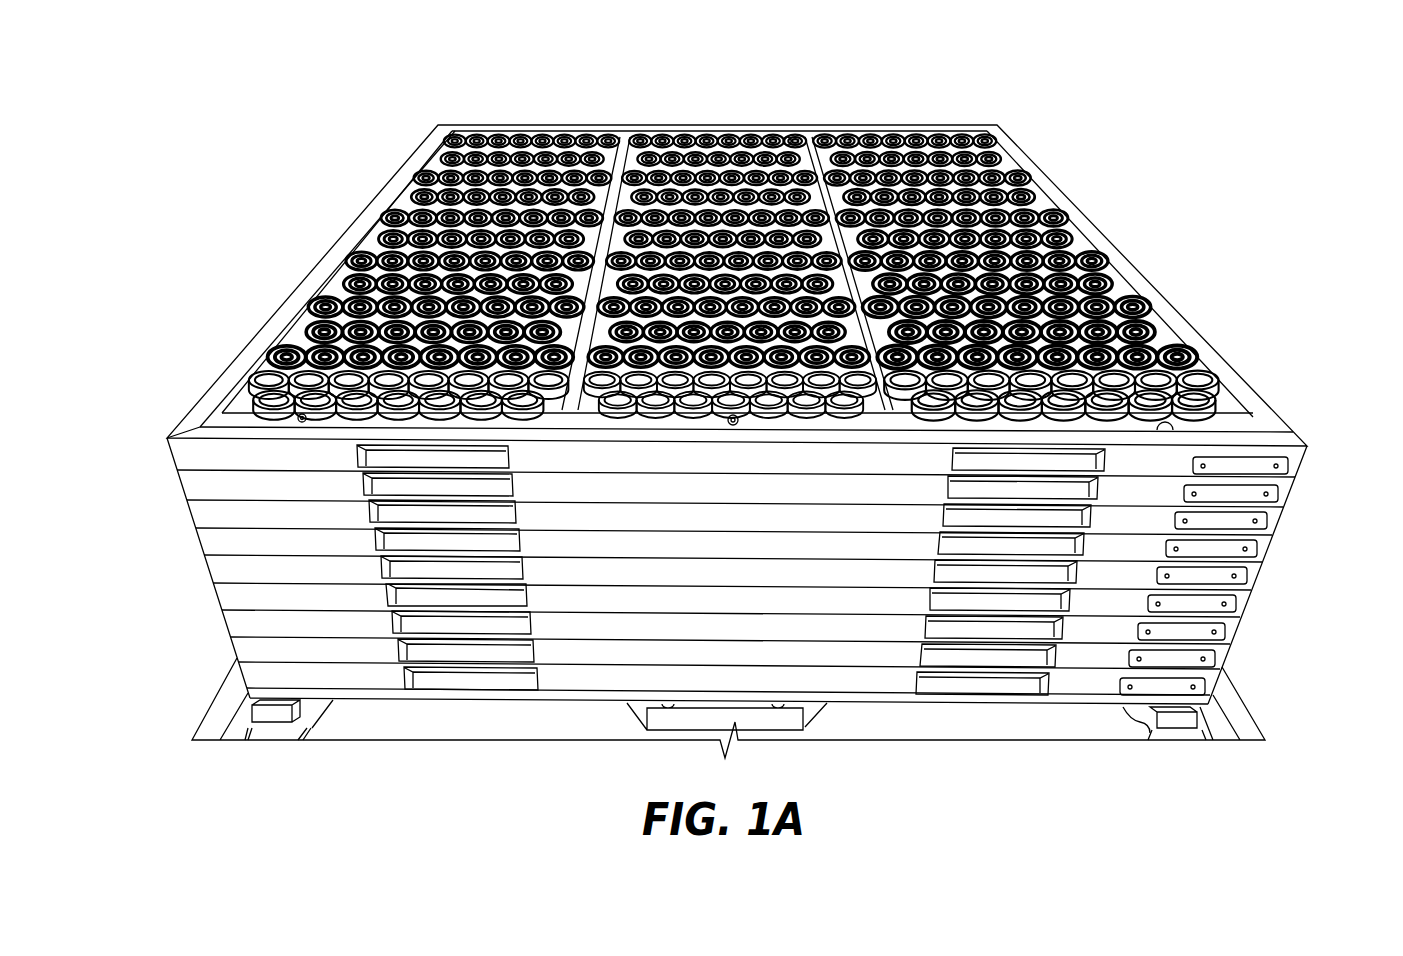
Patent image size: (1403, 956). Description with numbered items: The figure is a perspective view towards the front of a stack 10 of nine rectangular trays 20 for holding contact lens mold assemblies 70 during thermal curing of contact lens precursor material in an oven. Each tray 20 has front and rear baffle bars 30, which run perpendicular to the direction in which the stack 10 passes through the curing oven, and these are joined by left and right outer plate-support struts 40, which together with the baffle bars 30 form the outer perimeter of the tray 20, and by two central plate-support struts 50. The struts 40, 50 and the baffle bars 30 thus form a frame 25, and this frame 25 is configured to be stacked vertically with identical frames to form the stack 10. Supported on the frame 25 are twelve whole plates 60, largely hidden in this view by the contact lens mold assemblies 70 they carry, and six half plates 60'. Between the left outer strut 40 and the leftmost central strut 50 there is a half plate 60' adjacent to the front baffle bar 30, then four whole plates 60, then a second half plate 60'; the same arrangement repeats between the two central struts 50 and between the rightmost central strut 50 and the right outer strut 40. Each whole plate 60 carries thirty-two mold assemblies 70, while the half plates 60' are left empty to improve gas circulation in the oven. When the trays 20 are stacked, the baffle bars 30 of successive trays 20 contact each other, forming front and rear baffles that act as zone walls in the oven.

The stack 10 is at (438, 96).
The tray 20 is at (1306, 464).
The frame 25 is at (358, 216).
The baffle bar 30 is at (938, 128).
The outer plate-support strut 40 is at (327, 263).
The central plate-support strut 50 is at (621, 139).
The whole plate 60 is at (733, 224).
The half plate 60' is at (734, 436).
The contact lens mold assembly 70 is at (787, 140).